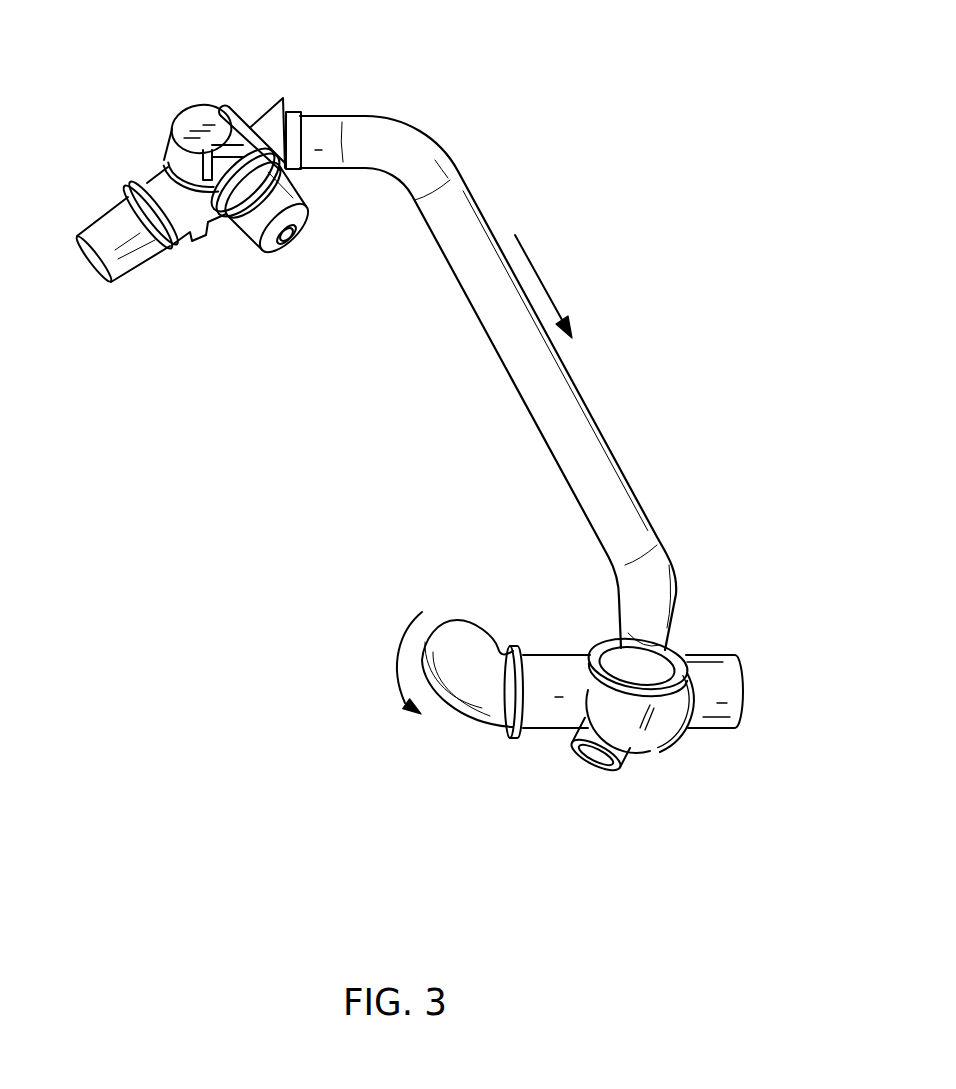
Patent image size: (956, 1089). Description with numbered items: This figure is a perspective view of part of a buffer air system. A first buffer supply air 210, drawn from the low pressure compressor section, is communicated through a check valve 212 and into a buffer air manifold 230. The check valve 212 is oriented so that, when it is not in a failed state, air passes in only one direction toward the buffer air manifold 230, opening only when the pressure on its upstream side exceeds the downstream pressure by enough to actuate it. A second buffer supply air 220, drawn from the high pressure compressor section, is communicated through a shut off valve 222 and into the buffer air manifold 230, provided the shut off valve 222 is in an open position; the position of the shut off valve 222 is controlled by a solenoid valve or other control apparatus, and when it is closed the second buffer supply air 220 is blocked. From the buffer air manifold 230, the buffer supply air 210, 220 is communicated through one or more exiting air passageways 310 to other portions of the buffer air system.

The first buffer supply air 210 is at (435, 667).
The check valve 212 is at (512, 648).
The second buffer supply air 220 is at (488, 383).
The shut off valve 222 is at (192, 103).
The buffer air manifold 230 is at (650, 732).
The exiting air passageways 310 is at (745, 692).